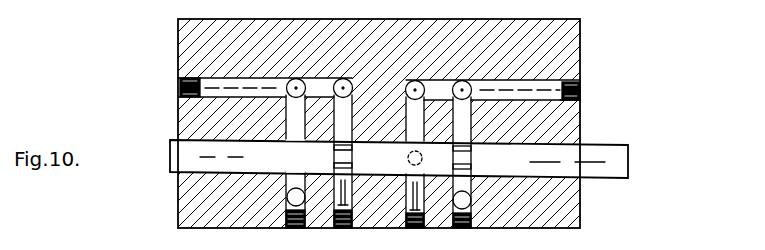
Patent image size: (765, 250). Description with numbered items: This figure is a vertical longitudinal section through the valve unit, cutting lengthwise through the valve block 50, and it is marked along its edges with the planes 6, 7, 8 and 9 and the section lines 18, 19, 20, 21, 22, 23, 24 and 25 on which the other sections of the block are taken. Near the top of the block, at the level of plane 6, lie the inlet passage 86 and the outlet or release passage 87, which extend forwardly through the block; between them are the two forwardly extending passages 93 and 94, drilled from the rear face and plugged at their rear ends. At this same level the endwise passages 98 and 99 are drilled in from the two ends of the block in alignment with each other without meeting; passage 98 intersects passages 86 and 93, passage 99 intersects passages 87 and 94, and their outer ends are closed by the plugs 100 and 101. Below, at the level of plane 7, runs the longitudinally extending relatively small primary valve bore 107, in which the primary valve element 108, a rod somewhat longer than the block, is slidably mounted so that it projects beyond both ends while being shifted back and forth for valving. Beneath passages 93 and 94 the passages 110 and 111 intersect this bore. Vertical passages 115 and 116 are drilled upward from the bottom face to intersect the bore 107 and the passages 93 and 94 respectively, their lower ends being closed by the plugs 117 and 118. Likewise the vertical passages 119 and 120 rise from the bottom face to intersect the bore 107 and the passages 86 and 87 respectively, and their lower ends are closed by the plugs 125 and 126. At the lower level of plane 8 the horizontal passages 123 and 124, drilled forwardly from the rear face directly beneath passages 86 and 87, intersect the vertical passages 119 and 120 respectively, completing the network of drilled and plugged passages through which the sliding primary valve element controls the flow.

The valve block 50 is at (556, 116).
The section plane 6— 6 is at (160, 80).
The section plane 7— 7 is at (165, 153).
The section plane 8— 8 is at (232, 193).
The section plane 9— 9 is at (176, 114).
The section line 18— 18 is at (594, 121).
The section line 19— 19 is at (580, 245).
The section line 20— 20 is at (540, 245).
The section line 21— 21 is at (425, 245).
The section line 22— 22 is at (413, 245).
The section line 23— 23 is at (300, 245).
The section line 24— 24 is at (292, 245).
The section line 25— 25 is at (596, 35).
The inlet passage 86 is at (580, 72).
The outlet or release passage 87 is at (200, 79).
The forwardly extending passage 93 is at (422, 81).
The forwardly extending passage 94 is at (338, 78).
The endwise passage 98 is at (578, 121).
The endwise passage 99 is at (200, 100).
The plug 100 is at (582, 97).
The plug 101 is at (182, 92).
The primary valve bore 107 is at (360, 114).
The primary valve element 108 is at (293, 152).
The passage 110 is at (405, 159).
The passage 111 is at (334, 151).
The vertical passage 115 is at (385, 118).
The vertical passage 116 is at (348, 98).
The plug 117 is at (394, 216).
The plug 118 is at (352, 198).
The vertical passage 119 is at (471, 118).
The vertical passage 120 is at (286, 113).
The horizontal passage 123 is at (466, 197).
The horizontal passage 124 is at (290, 178).
The plug 125 is at (472, 221).
The plug 126 is at (288, 221).